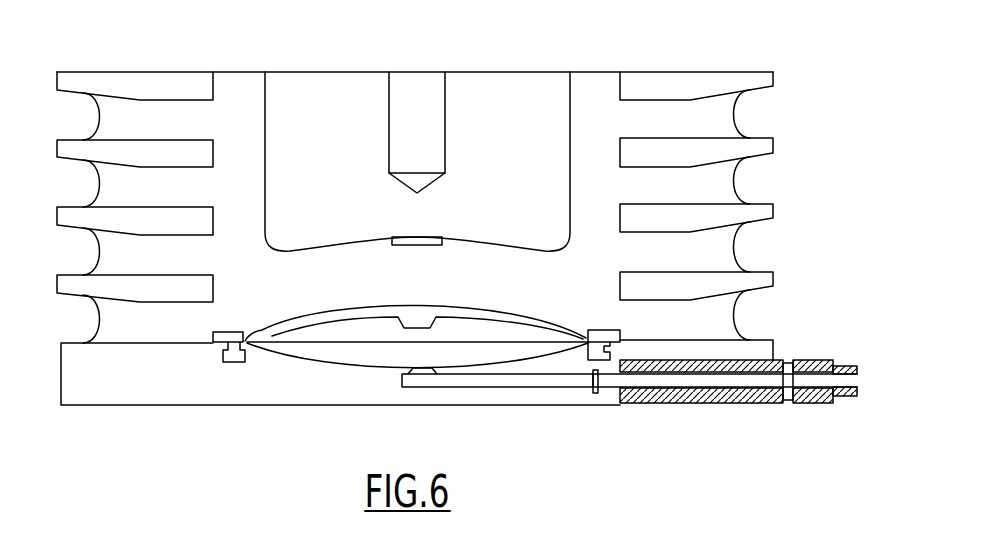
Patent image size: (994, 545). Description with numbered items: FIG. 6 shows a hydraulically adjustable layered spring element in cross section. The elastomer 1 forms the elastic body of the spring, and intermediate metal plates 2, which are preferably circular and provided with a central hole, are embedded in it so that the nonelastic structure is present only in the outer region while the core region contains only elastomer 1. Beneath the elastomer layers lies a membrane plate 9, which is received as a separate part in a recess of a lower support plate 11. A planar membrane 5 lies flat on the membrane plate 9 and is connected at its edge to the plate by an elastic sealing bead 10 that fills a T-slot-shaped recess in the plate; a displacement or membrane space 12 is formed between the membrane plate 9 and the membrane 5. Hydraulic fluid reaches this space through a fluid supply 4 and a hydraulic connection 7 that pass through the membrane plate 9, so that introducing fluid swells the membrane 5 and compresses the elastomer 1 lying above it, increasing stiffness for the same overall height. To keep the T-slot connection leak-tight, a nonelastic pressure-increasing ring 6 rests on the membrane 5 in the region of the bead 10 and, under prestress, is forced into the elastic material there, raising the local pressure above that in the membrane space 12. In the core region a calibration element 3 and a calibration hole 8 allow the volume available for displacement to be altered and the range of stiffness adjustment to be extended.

The elastomer 1 is at (415, 232).
The intermediate metal plates 2 is at (633, 285).
The calibration element 3 is at (522, 72).
The fluid supply 4 is at (483, 382).
The planar membrane 5 is at (286, 320).
The pressure-increasing ring 6 is at (600, 362).
The hydraulic connection 7 is at (735, 405).
The calibration hole 8 is at (388, 72).
The membrane plate 9 is at (307, 378).
The elastic sealing bead 10 is at (232, 363).
The lower support plate 11 is at (128, 378).
The membrane space 12 is at (385, 355).